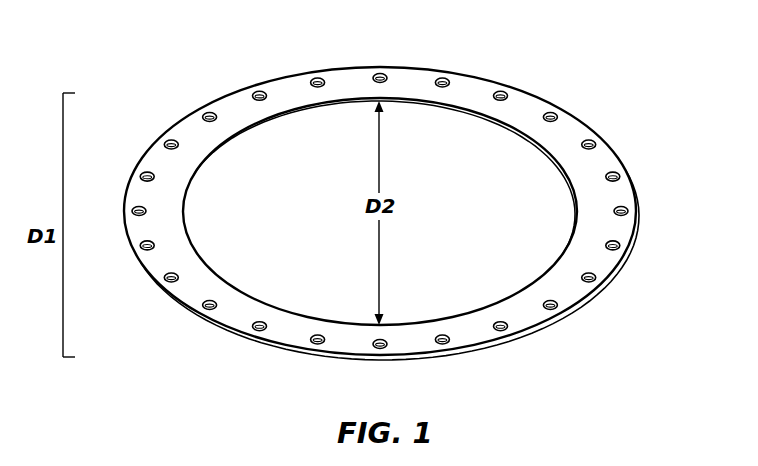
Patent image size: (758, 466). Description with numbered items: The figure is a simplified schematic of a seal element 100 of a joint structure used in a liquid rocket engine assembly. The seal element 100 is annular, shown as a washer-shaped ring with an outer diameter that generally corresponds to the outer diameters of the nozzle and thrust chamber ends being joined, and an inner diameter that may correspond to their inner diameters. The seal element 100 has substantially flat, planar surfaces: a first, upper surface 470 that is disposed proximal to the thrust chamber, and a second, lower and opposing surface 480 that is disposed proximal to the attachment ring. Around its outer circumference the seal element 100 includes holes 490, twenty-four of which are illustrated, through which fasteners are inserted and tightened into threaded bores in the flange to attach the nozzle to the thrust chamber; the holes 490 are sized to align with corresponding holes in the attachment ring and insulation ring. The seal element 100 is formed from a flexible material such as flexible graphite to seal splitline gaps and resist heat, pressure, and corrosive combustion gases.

The seal element 100 is at (428, 184).
The first surface 470 is at (218, 67).
The second surface 480 is at (622, 306).
The holes 490 is at (628, 149).